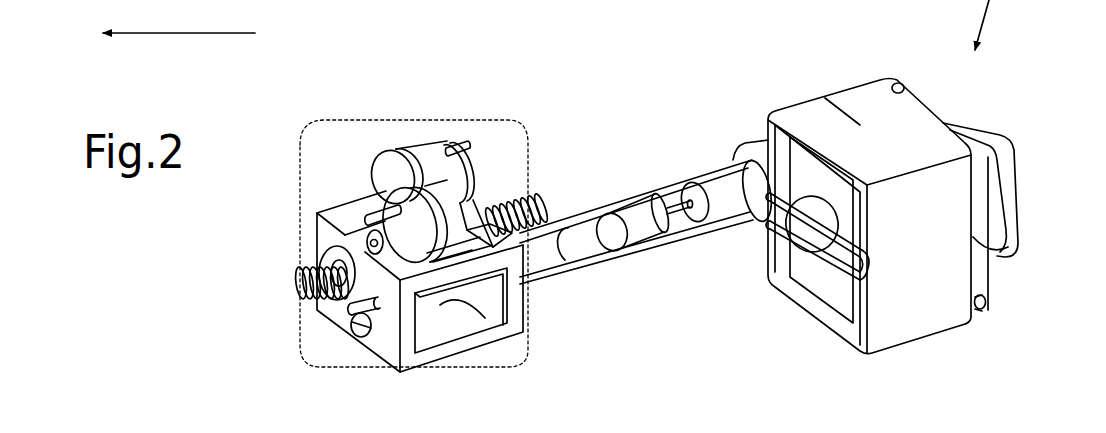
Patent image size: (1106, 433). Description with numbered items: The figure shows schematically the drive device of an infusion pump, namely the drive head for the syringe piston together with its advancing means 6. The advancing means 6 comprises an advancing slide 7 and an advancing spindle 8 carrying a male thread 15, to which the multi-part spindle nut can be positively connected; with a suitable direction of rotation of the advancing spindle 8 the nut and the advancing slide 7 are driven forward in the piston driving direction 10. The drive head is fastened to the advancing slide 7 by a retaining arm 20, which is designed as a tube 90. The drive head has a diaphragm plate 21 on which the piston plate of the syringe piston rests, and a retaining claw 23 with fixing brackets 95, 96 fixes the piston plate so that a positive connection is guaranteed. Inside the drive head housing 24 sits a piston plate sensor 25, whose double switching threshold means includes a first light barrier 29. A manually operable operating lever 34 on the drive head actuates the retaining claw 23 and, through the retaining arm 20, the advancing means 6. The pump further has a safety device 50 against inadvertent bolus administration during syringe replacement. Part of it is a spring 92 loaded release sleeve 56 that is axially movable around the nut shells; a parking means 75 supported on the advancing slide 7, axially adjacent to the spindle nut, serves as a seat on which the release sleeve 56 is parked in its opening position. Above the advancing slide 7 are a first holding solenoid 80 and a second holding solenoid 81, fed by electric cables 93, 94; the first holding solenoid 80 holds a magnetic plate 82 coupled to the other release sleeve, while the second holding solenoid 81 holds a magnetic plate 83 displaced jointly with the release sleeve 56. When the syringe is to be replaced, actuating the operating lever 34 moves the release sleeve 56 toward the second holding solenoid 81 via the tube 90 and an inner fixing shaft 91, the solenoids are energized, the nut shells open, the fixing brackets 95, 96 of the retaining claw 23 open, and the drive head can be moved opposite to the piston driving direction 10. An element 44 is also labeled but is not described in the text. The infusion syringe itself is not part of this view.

The advancing means 6 is at (533, 77).
The advancing slide 7 is at (320, 228).
The advancing spindle 8 is at (298, 287).
The piston driving direction 10 is at (172, 34).
The male thread 15 is at (533, 203).
The retaining arm 20 is at (653, 193).
The diaphragm plate 21 is at (812, 215).
The retaining claw 23 is at (834, 285).
The drive head housing 24 is at (858, 90).
The piston plate sensor 25 is at (385, 0).
The first light barrier 29 is at (345, 0).
The operating lever 34 is at (1012, 175).
The element 44 is at (93, 9).
The safety device 50 is at (330, 157).
The release sleeve 56 is at (500, 340).
The parking means 75 is at (323, 252).
The first holding solenoid 80 is at (437, 177).
The second holding solenoid 81 is at (418, 240).
The magnetic plate 82 is at (391, 153).
The magnetic plate 83 is at (455, 208).
The tube 90 is at (710, 168).
The inner fixing shaft 91 is at (675, 203).
The spring 92 is at (636, 233).
The electric cable 93 is at (452, 152).
The electric cable 94 is at (385, 212).
The fixing bracket 95 is at (843, 277).
The fixing bracket 96 is at (845, 275).